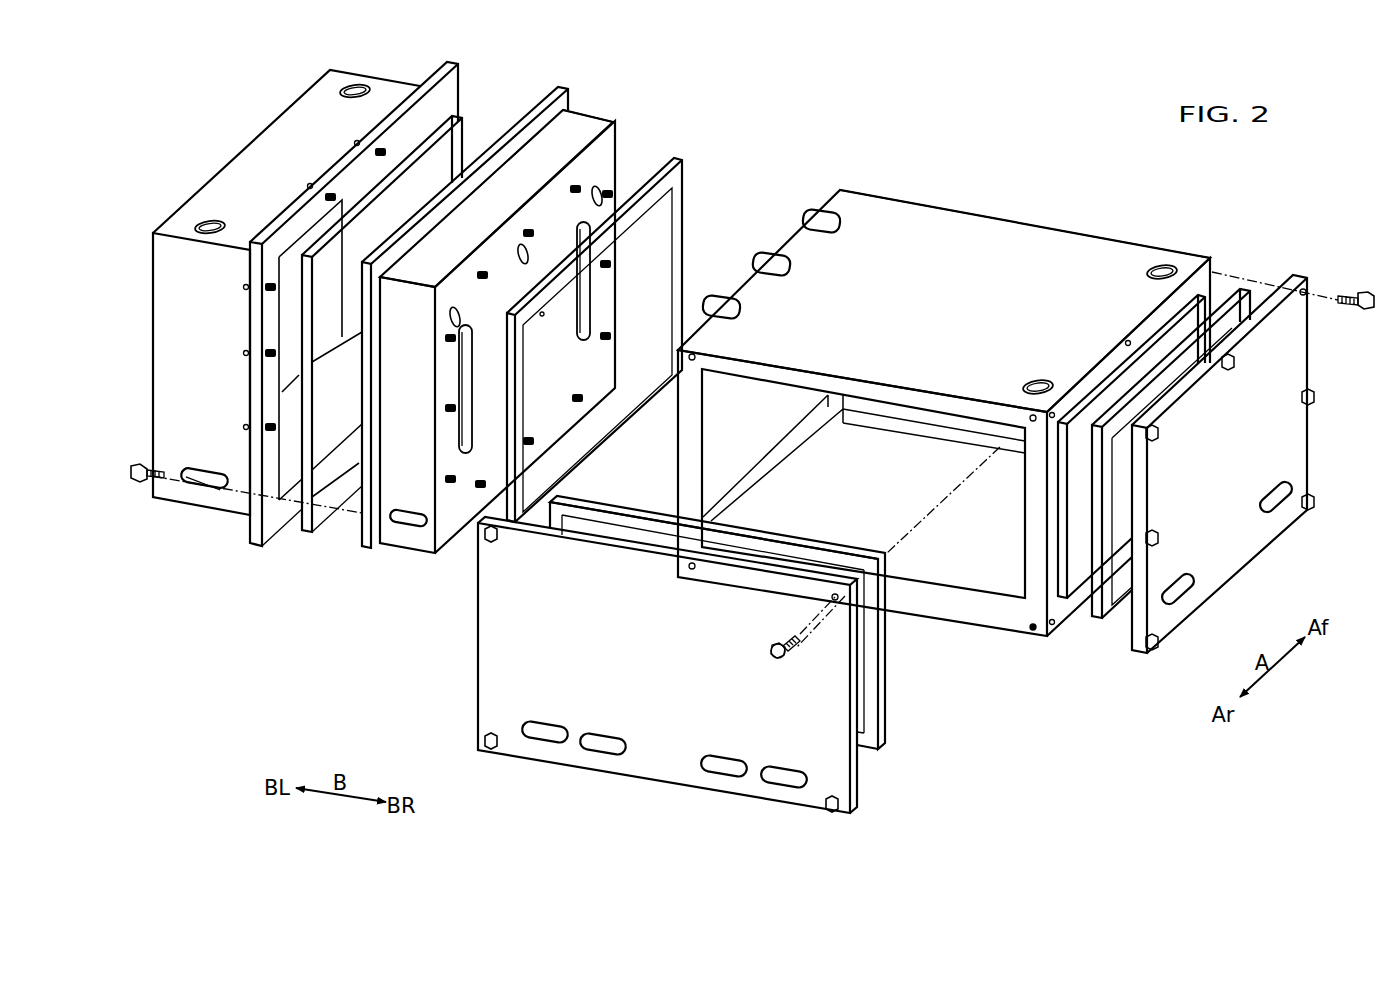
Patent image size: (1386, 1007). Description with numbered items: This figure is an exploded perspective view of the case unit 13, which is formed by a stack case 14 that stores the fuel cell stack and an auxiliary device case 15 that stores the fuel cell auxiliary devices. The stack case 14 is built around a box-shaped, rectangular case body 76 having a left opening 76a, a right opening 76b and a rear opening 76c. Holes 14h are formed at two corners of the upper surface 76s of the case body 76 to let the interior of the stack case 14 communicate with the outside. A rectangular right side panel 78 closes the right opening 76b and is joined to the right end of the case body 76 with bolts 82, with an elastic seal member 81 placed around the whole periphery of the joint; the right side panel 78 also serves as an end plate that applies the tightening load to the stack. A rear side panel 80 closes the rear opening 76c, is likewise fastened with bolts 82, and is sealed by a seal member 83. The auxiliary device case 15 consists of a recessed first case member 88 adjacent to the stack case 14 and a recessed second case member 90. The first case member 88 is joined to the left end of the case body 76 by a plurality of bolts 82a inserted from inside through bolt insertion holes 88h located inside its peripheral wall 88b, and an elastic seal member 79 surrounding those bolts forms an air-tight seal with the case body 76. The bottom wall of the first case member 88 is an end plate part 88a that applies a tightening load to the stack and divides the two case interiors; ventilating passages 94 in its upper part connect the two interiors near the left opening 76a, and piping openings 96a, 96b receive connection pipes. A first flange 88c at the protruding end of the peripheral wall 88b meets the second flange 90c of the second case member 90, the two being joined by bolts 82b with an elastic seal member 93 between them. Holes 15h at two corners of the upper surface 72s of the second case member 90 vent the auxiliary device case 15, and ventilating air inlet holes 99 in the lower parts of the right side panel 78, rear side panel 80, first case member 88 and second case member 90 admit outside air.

The case unit 13 is at (737, 110).
The stack case 14 is at (837, 183).
The holes 14h is at (1161, 267).
The auxiliary device case 15 is at (632, 128).
The holes 15h is at (342, 92).
The upper surface 72s is at (260, 155).
The case body 76 is at (1040, 246).
The left opening 76a is at (801, 431).
The right opening 76b is at (1065, 600).
The rear opening 76c is at (1022, 545).
The upper surface 76s is at (934, 220).
The right side panel 78 is at (1256, 536).
The seal member 79 is at (686, 236).
The rear side panel 80 is at (663, 768).
The seal member 81 is at (1097, 495).
The bolts 82 is at (1358, 306).
The bolts 82a is at (451, 482).
The bolts 82b is at (148, 512).
The seal member 83 is at (891, 713).
The first case member 88 is at (415, 550).
The end plate part 88a is at (612, 253).
The peripheral wall 88b is at (581, 122).
The first flange 88c is at (523, 113).
The bolt insertion holes 88h is at (542, 313).
The second case member 90 is at (231, 518).
The second flange 90c is at (367, 139).
The seal member 93 is at (307, 385).
The ventilating passages 94 is at (450, 317).
The piping opening 96a is at (588, 309).
The piping opening 96b is at (470, 384).
The ventilating air inlet holes 99 is at (210, 476).